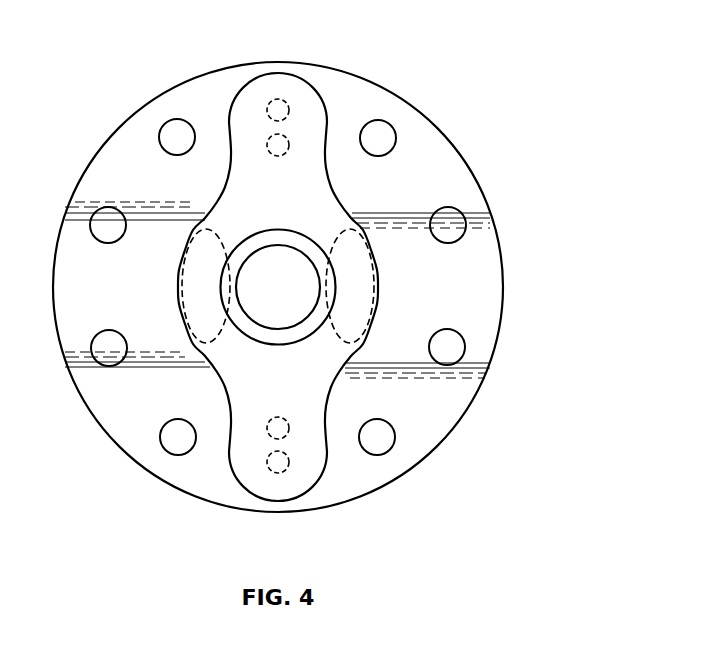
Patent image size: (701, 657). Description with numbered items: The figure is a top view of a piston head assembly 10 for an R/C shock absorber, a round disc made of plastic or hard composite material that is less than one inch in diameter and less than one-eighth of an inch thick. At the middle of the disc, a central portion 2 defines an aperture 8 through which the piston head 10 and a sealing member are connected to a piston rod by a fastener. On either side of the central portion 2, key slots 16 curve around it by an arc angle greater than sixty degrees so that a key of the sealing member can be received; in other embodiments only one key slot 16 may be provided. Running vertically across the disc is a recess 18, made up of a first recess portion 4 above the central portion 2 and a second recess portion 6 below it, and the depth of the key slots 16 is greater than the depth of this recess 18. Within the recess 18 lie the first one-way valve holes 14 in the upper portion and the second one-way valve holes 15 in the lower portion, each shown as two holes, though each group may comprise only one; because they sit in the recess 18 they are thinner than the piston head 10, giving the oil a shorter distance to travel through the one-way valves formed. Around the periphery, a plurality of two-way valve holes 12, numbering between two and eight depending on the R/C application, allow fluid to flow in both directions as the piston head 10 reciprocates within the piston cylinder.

The piston head assembly 10 is at (518, 73).
The central portion 2 is at (270, 233).
The first recess portion 4 is at (233, 115).
The second recess portion 6 is at (302, 483).
The aperture 8 is at (270, 253).
The two-way valve holes 12 is at (455, 220).
The first one-way valve holes 14 is at (273, 98).
The second one-way valve holes 15 is at (270, 422).
The key slots 16 is at (193, 262).
The recess 18 is at (317, 372).